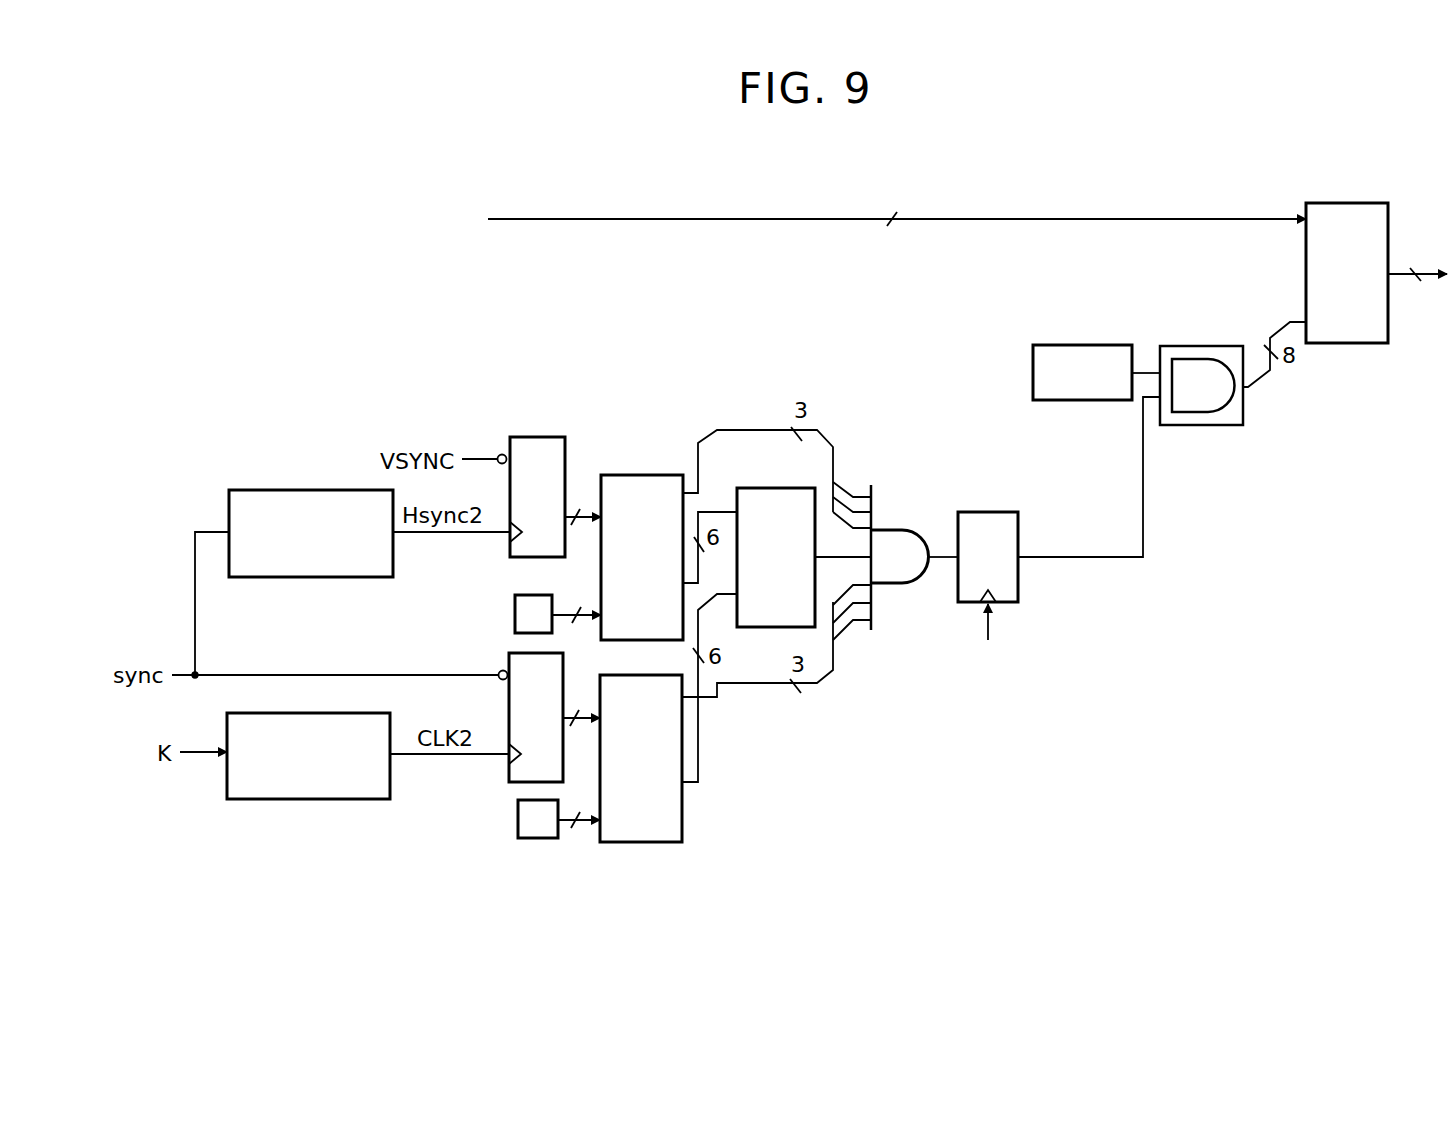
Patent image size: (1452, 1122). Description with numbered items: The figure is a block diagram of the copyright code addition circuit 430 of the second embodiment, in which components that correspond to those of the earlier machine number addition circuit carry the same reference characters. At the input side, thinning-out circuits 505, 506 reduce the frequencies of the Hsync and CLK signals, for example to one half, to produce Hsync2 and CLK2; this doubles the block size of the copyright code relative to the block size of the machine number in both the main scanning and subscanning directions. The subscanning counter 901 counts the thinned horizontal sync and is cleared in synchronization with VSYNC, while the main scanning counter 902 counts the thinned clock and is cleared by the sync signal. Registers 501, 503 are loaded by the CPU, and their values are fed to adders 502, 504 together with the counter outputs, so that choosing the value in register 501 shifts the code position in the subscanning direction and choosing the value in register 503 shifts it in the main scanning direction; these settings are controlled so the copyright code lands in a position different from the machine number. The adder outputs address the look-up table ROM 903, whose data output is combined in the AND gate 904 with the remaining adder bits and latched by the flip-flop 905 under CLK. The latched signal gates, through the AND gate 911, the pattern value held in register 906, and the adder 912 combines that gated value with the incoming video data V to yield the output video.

The copyright code addition circuit 430 is at (769, 179).
The thinning-out circuit 505 is at (338, 490).
The thinning-out circuit 506 is at (288, 801).
The subscanning counter 901 is at (553, 437).
The main scanning counter 902 is at (509, 661).
The register 501 is at (515, 611).
The register 503 is at (530, 840).
The adder 502 is at (640, 475).
The adder 504 is at (645, 843).
The look-up table ROM 903 is at (781, 488).
The AND gate 904 is at (902, 528).
The flip-flop 905 is at (1001, 512).
The register 906 is at (1090, 345).
The AND gate 911 is at (1207, 346).
The adder 912 is at (1357, 203).